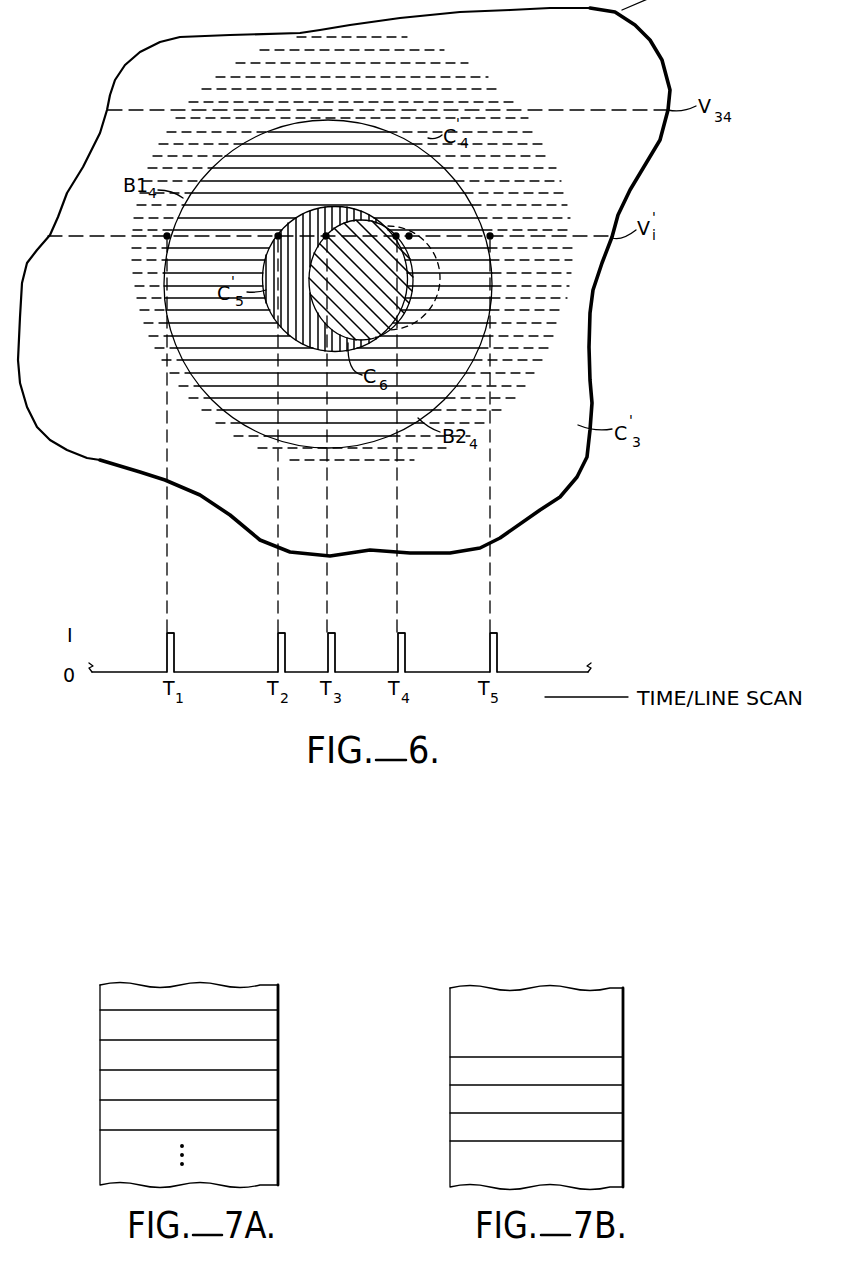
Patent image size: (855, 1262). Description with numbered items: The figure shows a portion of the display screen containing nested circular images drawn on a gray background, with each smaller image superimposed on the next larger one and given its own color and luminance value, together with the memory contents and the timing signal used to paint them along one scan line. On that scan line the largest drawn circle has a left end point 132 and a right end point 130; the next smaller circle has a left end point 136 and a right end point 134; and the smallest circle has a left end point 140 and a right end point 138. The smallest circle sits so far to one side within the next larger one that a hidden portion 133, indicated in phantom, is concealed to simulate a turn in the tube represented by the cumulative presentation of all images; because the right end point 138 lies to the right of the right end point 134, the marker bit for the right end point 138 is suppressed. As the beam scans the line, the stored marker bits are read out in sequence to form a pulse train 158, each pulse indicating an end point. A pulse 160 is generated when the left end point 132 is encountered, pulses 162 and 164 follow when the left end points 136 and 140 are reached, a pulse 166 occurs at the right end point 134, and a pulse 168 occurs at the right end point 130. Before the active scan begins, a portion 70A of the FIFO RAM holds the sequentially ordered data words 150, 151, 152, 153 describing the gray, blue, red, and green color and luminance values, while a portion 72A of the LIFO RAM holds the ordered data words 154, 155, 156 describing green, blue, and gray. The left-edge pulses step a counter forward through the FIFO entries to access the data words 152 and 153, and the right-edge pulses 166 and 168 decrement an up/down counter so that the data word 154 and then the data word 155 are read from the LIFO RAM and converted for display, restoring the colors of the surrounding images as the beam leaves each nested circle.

In FIG. 6, the right end point 130 is at (490, 236).
In FIG. 6, the left end point 132 is at (167, 236).
In FIG. 6, the hidden portion 133 is at (427, 312).
In FIG. 6, the right end point 134 is at (396, 236).
In FIG. 6, the left end point 136 is at (278, 236).
In FIG. 6, the right end point 138 is at (409, 236).
In FIG. 6, the left end point 140 is at (326, 236).
In FIG. 6, the pulse train 158 is at (570, 662).
In FIG. 6, the pulse 160 is at (174, 634).
In FIG. 6, the pulse 162 is at (292, 621).
In FIG. 6, the pulse 164 is at (345, 621).
In FIG. 6, the pulse 166 is at (405, 634).
In FIG. 6, the pulse 168 is at (497, 634).
In FIG. 7A, the portion of FIFO RAM 70A is at (272, 978).
In FIG. 7A, the data word 150 is at (278, 1026).
In FIG. 7A, the data word 151 is at (278, 1057).
In FIG. 7A, the data word 152 is at (278, 1092).
In FIG. 7A, the data word 153 is at (278, 1116).
In FIG. 7B, the portion of LIFO RAM 72A is at (622, 967).
In FIG. 7B, the data word 154 is at (623, 1072).
In FIG. 7B, the data word 155 is at (623, 1100).
In FIG. 7B, the data word 156 is at (623, 1128).